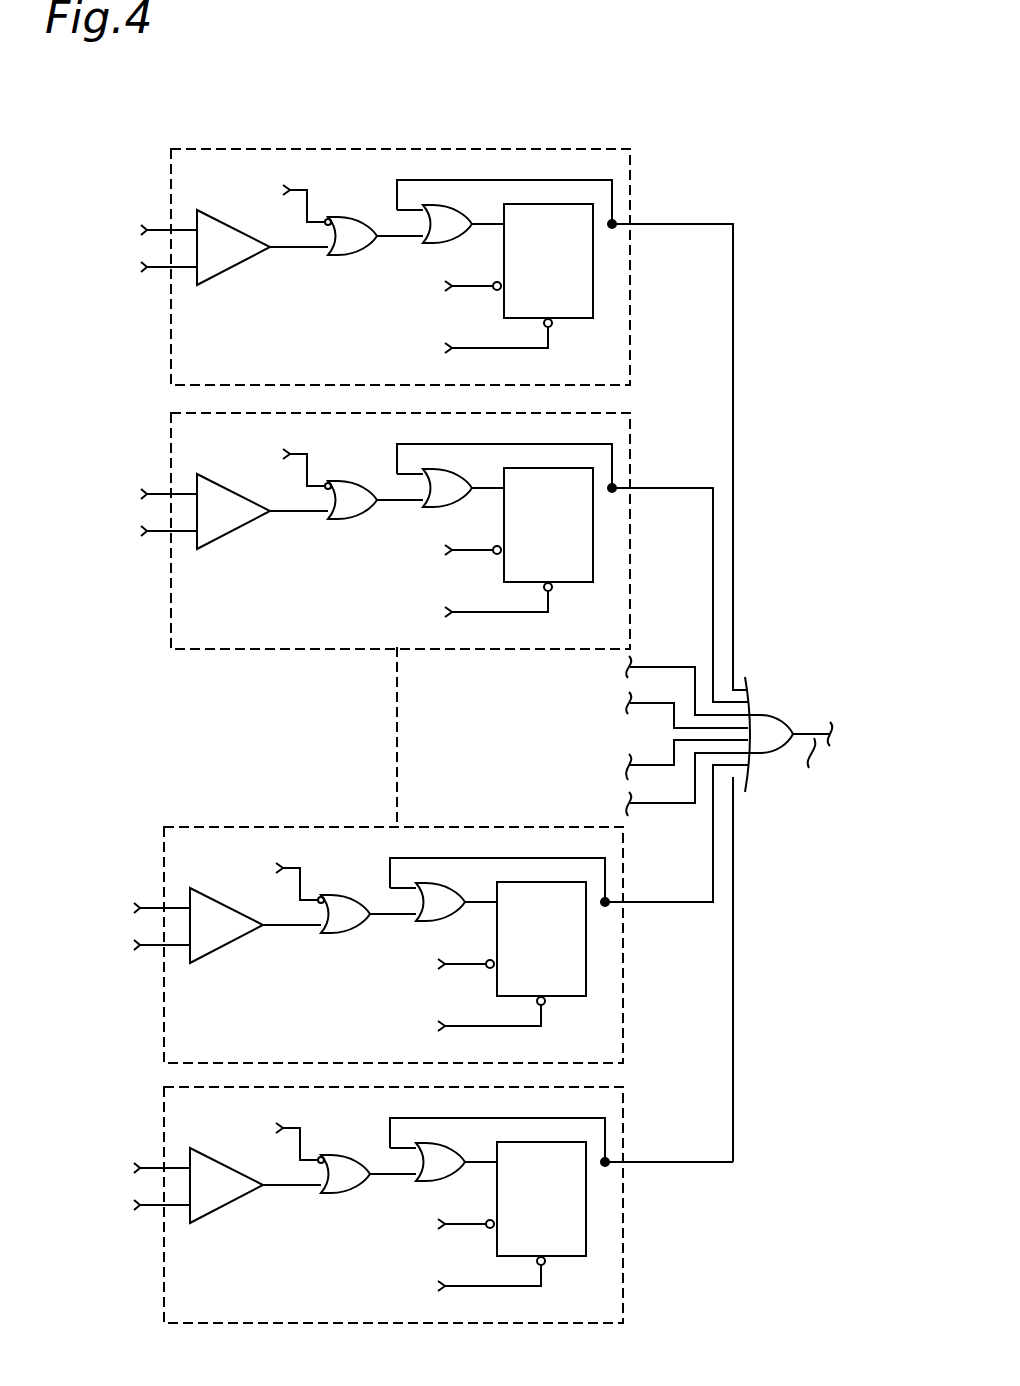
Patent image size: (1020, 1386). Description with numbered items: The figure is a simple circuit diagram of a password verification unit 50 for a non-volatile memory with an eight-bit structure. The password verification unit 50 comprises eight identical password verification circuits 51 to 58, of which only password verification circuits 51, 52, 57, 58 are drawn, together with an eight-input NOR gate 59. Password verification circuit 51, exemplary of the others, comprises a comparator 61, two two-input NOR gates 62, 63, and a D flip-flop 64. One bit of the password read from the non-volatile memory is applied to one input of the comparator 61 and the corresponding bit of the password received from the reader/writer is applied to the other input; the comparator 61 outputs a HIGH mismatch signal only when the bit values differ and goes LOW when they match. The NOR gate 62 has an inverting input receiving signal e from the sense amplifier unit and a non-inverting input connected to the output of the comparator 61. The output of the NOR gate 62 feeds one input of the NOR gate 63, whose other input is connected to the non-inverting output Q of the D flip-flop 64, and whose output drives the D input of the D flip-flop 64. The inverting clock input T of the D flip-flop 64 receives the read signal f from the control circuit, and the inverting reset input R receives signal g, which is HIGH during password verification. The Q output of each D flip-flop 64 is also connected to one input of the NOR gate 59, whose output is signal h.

The password verification unit 50 is at (735, 212).
The password verification circuit 51 is at (398, 244).
The password verification circuit 52 is at (632, 441).
The password verification circuit 57 is at (628, 977).
The password verification circuit 58 is at (627, 1239).
The 8-input NOR gate 59 is at (773, 713).
The comparator 61 is at (235, 268).
The 2-input NOR gate 62 is at (342, 216).
The 2-input NOR gate 63 is at (445, 206).
The D flip-flop 64 is at (588, 318).